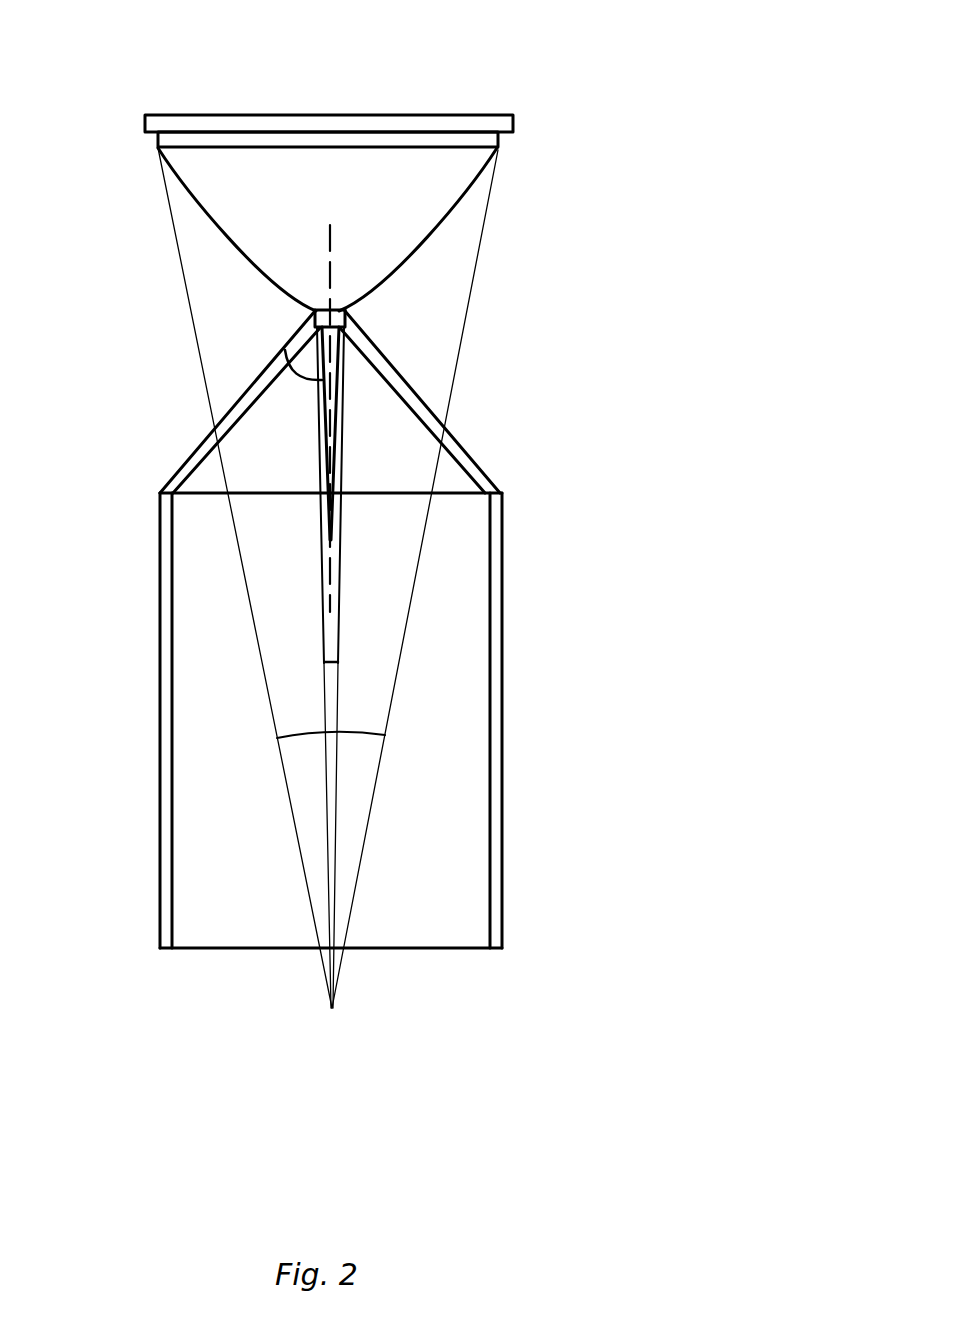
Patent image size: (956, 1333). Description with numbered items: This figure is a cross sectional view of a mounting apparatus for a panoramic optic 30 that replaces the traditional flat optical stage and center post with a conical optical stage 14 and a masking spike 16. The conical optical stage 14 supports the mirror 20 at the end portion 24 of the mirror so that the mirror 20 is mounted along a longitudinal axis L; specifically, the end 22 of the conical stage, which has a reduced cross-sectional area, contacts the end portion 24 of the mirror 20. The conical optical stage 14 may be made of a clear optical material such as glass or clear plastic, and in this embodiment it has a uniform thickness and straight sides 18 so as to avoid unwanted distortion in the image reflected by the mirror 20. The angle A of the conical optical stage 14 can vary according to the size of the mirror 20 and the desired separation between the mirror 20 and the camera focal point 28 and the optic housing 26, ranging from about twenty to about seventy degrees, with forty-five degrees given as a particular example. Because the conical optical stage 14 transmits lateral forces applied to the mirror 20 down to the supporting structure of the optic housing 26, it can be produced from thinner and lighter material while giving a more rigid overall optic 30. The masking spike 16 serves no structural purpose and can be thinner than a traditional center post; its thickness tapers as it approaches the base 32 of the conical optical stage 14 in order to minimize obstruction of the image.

The optic 30 is at (650, 108).
The mirror 20 is at (250, 190).
The longitudinal axis L is at (330, 272).
The end portion of the mirror 24 is at (317, 310).
The end of the conical stage 22 is at (337, 317).
The angle A is at (288, 377).
The masking spike 16 is at (333, 413).
The straight sides 18 is at (202, 445).
The conical optical stage 14 is at (473, 460).
The base of the conical optical stage 32 is at (452, 495).
The optic housing 26 is at (160, 720).
The camera focal point 28 is at (318, 1018).